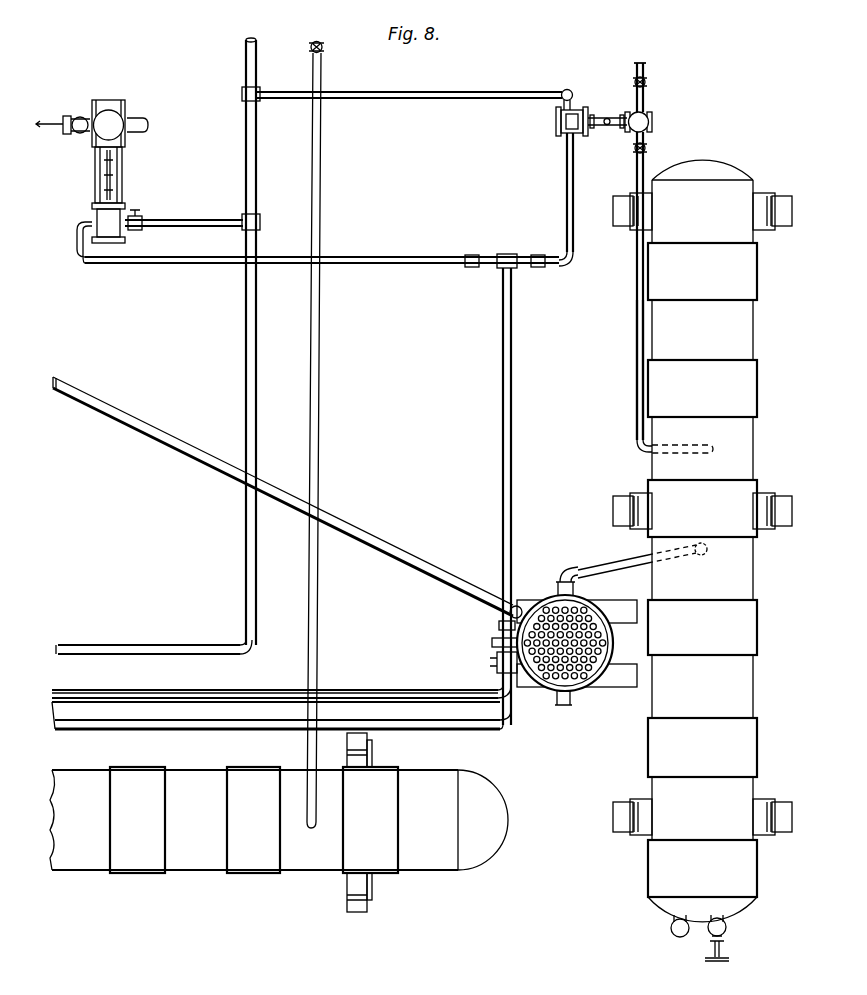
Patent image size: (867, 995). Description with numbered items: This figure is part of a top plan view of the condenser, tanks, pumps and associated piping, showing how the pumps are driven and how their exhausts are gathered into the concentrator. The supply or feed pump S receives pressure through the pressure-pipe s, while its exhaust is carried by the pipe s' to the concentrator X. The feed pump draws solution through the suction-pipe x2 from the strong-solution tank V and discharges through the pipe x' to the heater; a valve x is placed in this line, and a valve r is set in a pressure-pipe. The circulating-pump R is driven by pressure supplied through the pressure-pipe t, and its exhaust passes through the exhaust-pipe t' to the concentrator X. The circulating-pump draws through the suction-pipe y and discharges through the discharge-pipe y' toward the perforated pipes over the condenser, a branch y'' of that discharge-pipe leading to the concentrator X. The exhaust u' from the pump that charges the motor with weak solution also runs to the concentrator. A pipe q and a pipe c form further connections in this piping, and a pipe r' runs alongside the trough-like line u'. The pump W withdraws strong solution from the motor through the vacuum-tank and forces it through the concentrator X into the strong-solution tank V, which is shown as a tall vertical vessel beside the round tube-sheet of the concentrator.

The vertical pipe q is at (260, 341).
The pressure-pipe to feed-pump s is at (414, 109).
The exhaust from feed-pump to concentrator s' is at (519, 429).
The supply or feed pump S is at (610, 112).
The valve x is at (669, 258).
The discharge to heater x' is at (650, 60).
The suction-pipe to feed-pump x2 is at (636, 378).
The suction-pipe to circulating-pump y is at (130, 123).
The discharge-pipe from circulating-pump y' is at (63, 137).
The branch of the discharge-pipe to the concentrator y'' is at (287, 497).
The circulating-pump R is at (118, 175).
The pressure-pipe to drive circulating-pump t is at (167, 219).
The exhaust-pipe from circulating-pump to concentrator t' is at (302, 251).
The pipe c is at (321, 435).
The valve in pressure-pipe r is at (154, 640).
The pipe r' is at (281, 684).
The exhaust from charging pump to concentrator u' is at (269, 727).
The strong-solution tank V is at (598, 574).
The concentrating-tank X is at (565, 643).
The pump for withdrawing strong solution W is at (215, 812).